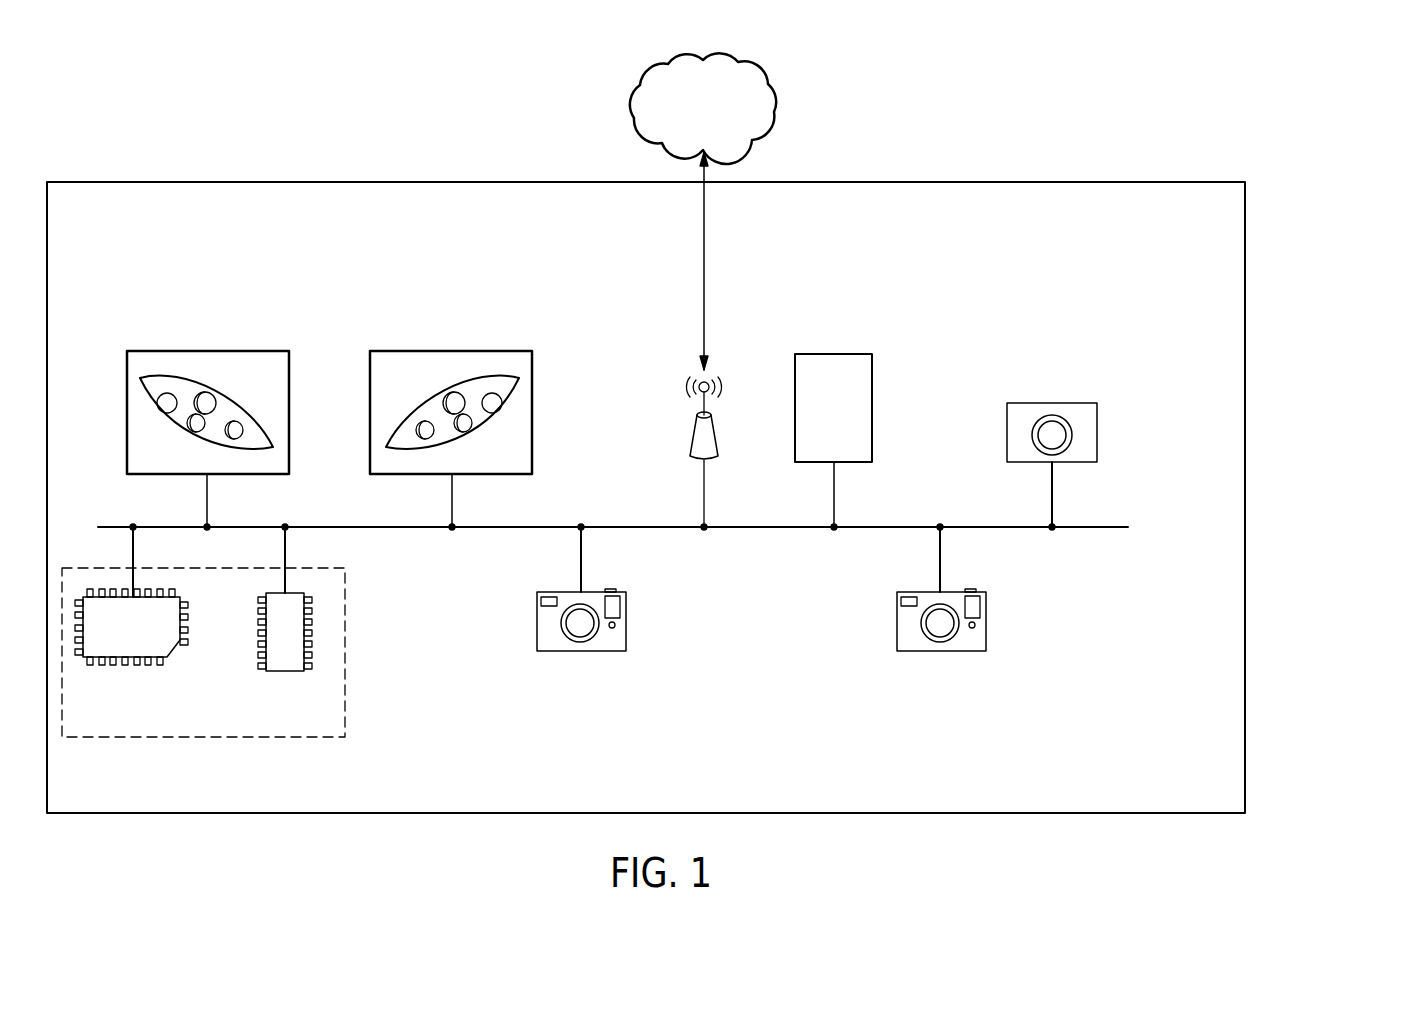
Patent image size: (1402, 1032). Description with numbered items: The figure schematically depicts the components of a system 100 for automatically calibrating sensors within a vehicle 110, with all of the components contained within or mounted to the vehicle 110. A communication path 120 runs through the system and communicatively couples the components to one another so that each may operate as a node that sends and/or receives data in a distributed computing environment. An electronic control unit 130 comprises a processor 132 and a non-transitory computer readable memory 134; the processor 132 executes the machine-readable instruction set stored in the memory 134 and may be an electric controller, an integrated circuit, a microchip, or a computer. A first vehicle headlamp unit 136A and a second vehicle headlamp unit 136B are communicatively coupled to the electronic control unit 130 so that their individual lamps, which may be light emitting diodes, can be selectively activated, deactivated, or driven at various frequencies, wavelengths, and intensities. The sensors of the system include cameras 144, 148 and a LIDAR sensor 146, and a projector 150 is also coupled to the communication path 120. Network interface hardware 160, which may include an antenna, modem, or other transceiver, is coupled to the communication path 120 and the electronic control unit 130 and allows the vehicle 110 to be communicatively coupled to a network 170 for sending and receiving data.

The system 100 is at (1263, 172).
The vehicle 110 is at (1245, 304).
The communication path 120 is at (112, 527).
The electronic control unit 130 is at (345, 716).
The processor 132 is at (173, 653).
The non-transitory computer readable memory 134 is at (283, 671).
The first vehicle headlamp unit 136A is at (208, 351).
The second vehicle headlamp unit 136B is at (452, 351).
The camera 144 is at (580, 651).
The LIDAR sensor 146 is at (835, 354).
The camera 148 is at (940, 651).
The projector 150 is at (1052, 403).
The network interface hardware 160 is at (694, 429).
The network 170 is at (632, 103).